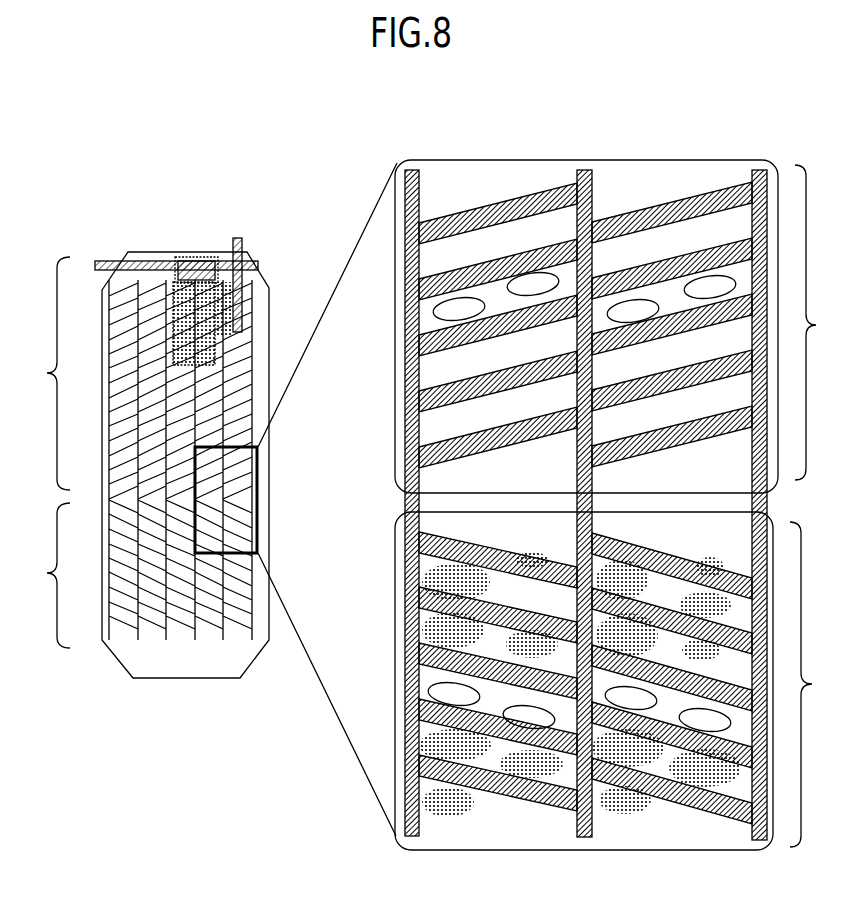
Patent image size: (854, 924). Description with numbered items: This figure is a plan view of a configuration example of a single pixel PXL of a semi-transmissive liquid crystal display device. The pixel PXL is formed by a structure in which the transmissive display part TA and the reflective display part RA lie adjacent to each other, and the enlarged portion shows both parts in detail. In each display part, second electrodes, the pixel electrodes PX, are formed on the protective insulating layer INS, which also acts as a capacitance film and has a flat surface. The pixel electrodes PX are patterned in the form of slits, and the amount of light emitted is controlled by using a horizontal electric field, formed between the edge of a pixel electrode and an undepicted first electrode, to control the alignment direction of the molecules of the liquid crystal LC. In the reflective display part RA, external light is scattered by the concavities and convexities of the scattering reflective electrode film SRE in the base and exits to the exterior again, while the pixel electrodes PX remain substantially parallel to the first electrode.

The pixel PXL is at (140, 662).
The protective insulating layer INS is at (442, 193).
The scattering reflective electrode film SRE is at (626, 812).
The second electrodes (pixel electrodes) PX is at (695, 200).
The liquid crystal LC is at (540, 262).
The transmissive display part TA is at (427, 327).
The reflective display part RA is at (430, 675).